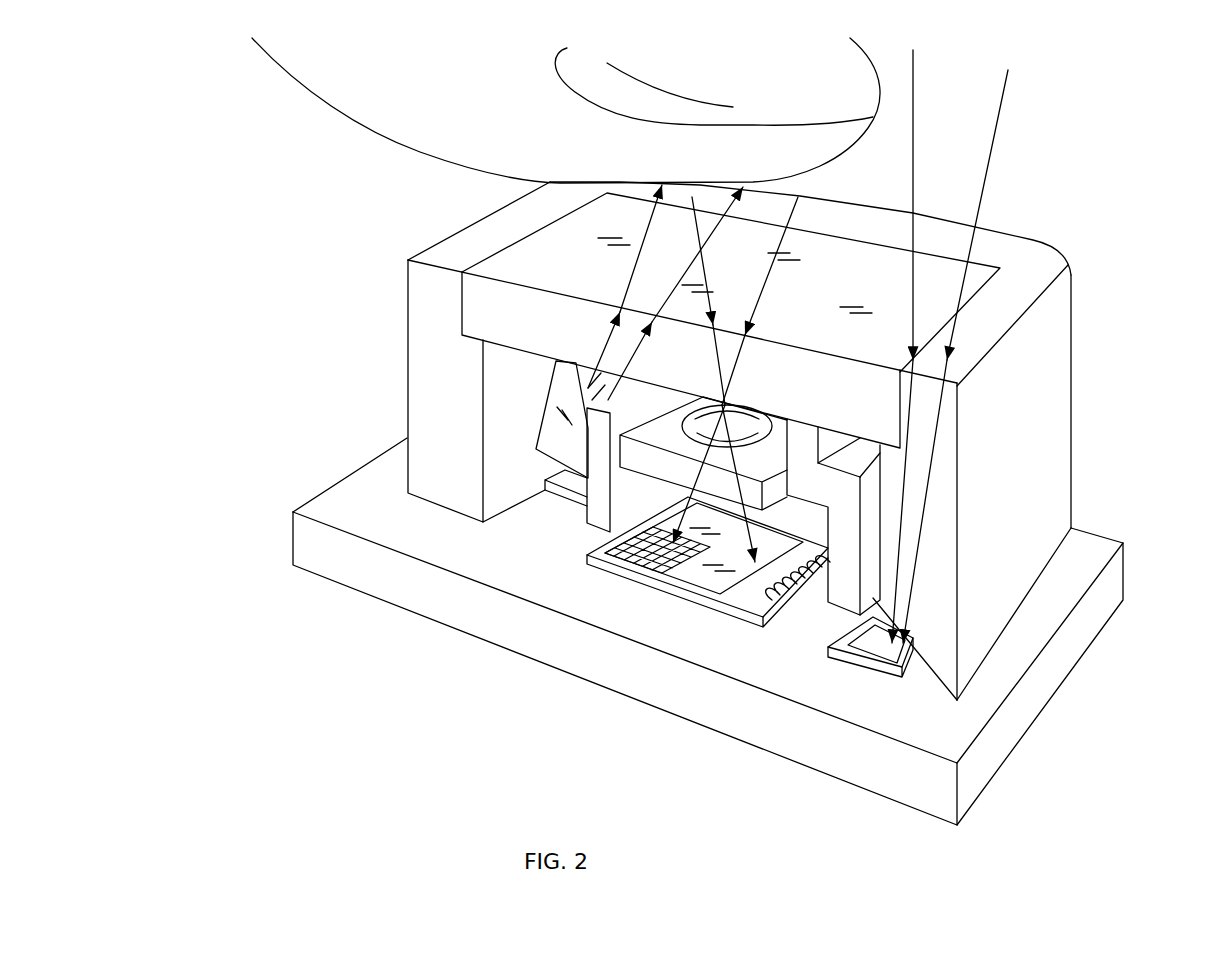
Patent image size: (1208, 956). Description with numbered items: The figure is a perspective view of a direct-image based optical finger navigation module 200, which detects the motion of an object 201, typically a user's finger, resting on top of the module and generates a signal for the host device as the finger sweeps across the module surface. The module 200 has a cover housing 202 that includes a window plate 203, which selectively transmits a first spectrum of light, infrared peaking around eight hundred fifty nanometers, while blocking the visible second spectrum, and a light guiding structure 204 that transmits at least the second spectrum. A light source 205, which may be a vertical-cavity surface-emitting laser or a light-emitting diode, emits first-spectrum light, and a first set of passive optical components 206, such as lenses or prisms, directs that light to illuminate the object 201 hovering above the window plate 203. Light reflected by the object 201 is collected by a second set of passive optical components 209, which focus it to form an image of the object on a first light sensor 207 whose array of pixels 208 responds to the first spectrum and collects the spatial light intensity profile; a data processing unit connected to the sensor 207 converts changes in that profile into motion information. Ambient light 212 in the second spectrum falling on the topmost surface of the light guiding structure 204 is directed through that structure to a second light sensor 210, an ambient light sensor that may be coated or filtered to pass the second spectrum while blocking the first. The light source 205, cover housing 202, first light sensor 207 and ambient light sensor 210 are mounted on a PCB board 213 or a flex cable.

The optical finger navigation module 200 is at (1134, 433).
The object 201 is at (480, 143).
The cover housing 202 is at (398, 355).
The window plate 203 is at (565, 240).
The light guiding structure 204 is at (438, 322).
The light source 205 is at (545, 480).
The first set of passive optical components 206 is at (547, 437).
The first light sensor 207 is at (587, 563).
The array of pixels 208 is at (642, 543).
The second set of passive optical components 209 is at (725, 460).
The second light sensor 210 is at (870, 660).
The ambient light 212 is at (955, 186).
The PCB board 213 is at (913, 712).